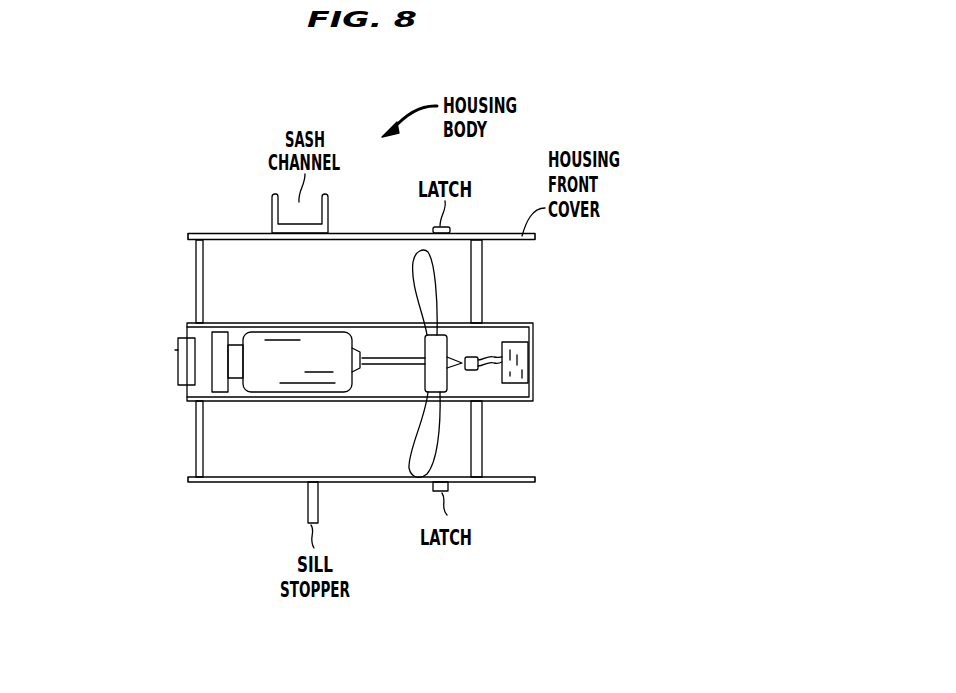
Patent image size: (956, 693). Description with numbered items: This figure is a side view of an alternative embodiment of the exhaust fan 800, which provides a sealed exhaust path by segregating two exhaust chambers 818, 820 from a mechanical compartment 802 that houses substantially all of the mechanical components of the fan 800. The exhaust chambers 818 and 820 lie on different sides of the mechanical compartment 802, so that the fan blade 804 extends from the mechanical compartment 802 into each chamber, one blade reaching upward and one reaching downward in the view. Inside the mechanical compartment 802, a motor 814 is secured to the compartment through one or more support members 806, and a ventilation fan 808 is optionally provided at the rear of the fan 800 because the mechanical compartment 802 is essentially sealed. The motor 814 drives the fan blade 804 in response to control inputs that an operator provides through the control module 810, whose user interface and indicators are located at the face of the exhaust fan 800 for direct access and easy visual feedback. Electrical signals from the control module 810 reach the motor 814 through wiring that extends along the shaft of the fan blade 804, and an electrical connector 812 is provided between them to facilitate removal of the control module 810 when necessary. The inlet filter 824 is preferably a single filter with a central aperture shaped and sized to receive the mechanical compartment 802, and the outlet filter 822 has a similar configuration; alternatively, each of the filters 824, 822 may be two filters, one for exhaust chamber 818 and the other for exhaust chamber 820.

The exhaust fan 800 is at (625, 572).
The mechanical compartment 802 is at (705, 393).
The fan blade 804 is at (422, 462).
The support member 806 is at (218, 378).
The ventilation fan 808 is at (178, 355).
The control module 810 is at (529, 352).
The electrical connector 812 is at (478, 358).
The motor 814 is at (308, 338).
The exhaust chamber 818 is at (248, 246).
The exhaust chamber 820 is at (265, 463).
The outlet filter 822 is at (196, 267).
The inlet filter 824 is at (482, 441).